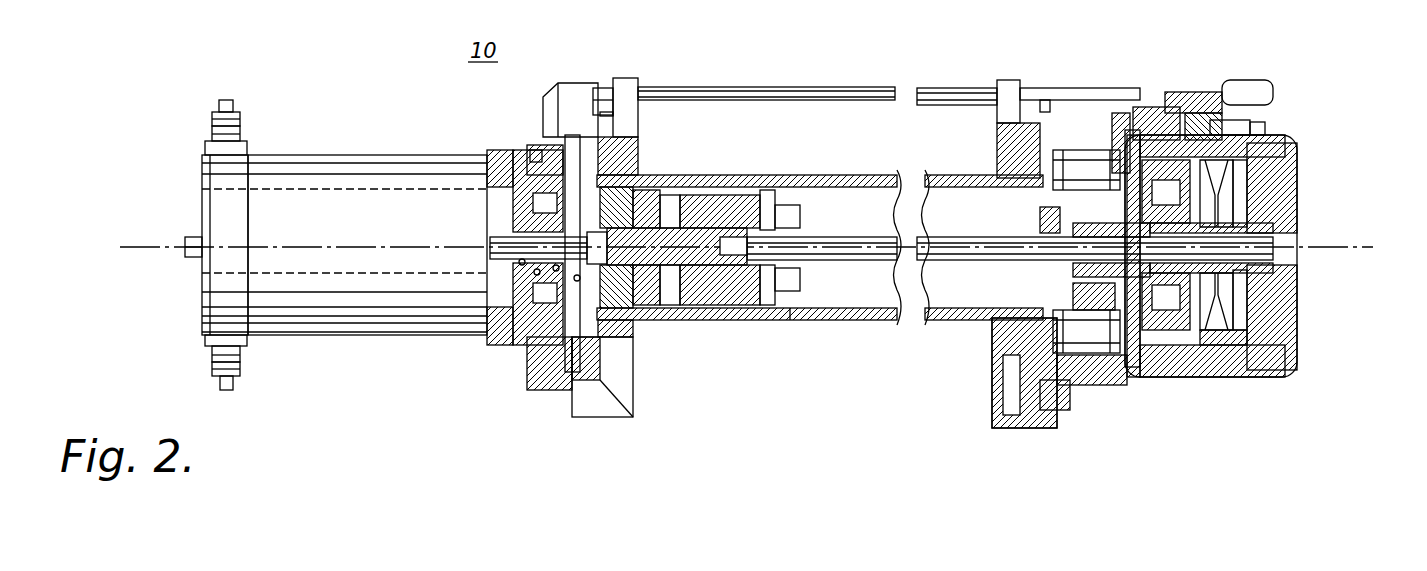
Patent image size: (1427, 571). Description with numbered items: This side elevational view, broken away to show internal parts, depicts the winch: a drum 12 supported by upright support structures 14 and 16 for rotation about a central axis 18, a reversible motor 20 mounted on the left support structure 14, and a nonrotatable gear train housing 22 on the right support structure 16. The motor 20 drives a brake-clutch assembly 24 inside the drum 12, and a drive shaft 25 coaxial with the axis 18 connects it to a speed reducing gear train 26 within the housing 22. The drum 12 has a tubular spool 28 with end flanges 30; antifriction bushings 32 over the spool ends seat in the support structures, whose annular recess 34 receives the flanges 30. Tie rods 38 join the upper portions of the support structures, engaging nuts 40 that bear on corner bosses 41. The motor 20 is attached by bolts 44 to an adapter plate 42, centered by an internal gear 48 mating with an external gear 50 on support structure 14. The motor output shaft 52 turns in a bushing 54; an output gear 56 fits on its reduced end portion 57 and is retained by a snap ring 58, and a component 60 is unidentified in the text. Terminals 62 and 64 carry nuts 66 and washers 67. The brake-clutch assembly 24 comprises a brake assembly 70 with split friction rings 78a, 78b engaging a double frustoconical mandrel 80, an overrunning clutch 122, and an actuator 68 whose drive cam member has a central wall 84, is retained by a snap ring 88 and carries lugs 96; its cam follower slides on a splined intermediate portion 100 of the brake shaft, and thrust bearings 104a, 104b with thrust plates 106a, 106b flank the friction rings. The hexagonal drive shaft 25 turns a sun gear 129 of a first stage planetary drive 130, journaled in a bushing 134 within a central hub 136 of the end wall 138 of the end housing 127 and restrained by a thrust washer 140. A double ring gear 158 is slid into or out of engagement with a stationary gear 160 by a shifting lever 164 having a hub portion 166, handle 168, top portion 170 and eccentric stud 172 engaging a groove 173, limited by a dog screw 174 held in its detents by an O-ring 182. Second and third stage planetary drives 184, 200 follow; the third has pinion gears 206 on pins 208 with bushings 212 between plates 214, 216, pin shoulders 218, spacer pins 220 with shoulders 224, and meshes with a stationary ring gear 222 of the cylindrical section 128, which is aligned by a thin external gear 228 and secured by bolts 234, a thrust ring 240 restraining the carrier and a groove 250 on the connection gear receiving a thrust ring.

The drum 12 is at (725, 322).
The support structure 14 is at (628, 78).
The support structure 16 is at (990, 90).
The longitudinal central axis 18 is at (1300, 250).
The reversible motor 20 is at (343, 155).
The gear train housing 22 is at (1130, 85).
The brake-clutch assembly 24 is at (835, 320).
The drive shaft 25 is at (960, 237).
The speed reducing gear train 26 is at (1262, 297).
The hollow tubular spool 28 is at (790, 320).
The end flanges 30 is at (620, 320).
The antifriction bushings 32 is at (633, 320).
The annularly-shaped recess 34 is at (612, 150).
The tie rods 38 is at (760, 87).
The nuts 40 is at (603, 88).
The recessed corner bosses 41 is at (606, 112).
The adapter plate 42 is at (545, 105).
The elongate bolts 44 is at (196, 237).
The internal gear 48 is at (590, 385).
The external gear 50 is at (572, 380).
The output shaft 52 is at (510, 240).
The bushing 54 is at (513, 158).
The output gear 56 is at (535, 272).
The shaft end portion 57 is at (520, 262).
The snap ring 58 is at (555, 268).
The coupling key 60 is at (520, 250).
The terminal 62 is at (222, 100).
The terminal 64 is at (226, 392).
The nuts 66 is at (212, 128).
The washers 67 is at (240, 127).
The actuator 68 is at (540, 147).
The brake assembly 70 is at (745, 310).
The split friction ring 78a is at (665, 215).
The split friction ring 78b is at (700, 190).
The mandrel 80 is at (790, 295).
The central wall 84 is at (580, 358).
The snap ring 88 is at (518, 243).
The lugs 96 is at (640, 200).
The splined intermediate portion 100 is at (690, 228).
The thrust bearing 104a is at (612, 193).
The thrust bearing 104b is at (780, 205).
The thrust plate 106a is at (655, 308).
The thrust plate 106b is at (740, 195).
The overrunning clutch 122 is at (770, 276).
The end housing 127 is at (1300, 353).
The cylindrical section 128 is at (1160, 385).
The sun gear 129 is at (1273, 262).
The first stage planetary drive 130 is at (1207, 333).
The bushing 134 is at (1258, 220).
The central hub 136 is at (1263, 285).
The end wall 138 is at (1287, 170).
The thrust washer 140 is at (1270, 210).
The double ring gear 158 is at (1075, 150).
The stationary gear 160 is at (1255, 330).
The shifting lever 164 is at (1190, 92).
The hub portion 166 is at (1155, 107).
The handle 168 is at (1245, 80).
The top portion 170 is at (1218, 92).
The stud 172 is at (1185, 113).
The groove 173 is at (1265, 135).
The dog screw 174 is at (1250, 127).
The O-ring 182 is at (1260, 95).
The second stage planetary drive 184 is at (1178, 333).
The third stage planetary drive 200 is at (1045, 100).
The pinion gears 206 is at (1085, 385).
The pins 208 is at (1100, 385).
The bushings 212 is at (1090, 385).
The carrier plate 214 is at (1115, 380).
The carrier plate 216 is at (1065, 385).
The reduced diameter shoulders 218 is at (1053, 325).
The spacer pins 220 is at (1060, 150).
The stationary ring gear 222 is at (1073, 385).
The reduced diameter shoulders 224 is at (1053, 165).
The external gear 228 is at (1140, 385).
The elongate bolts 234 is at (1065, 148).
The thrust ring 240 is at (1180, 335).
The groove 250 is at (1010, 265).